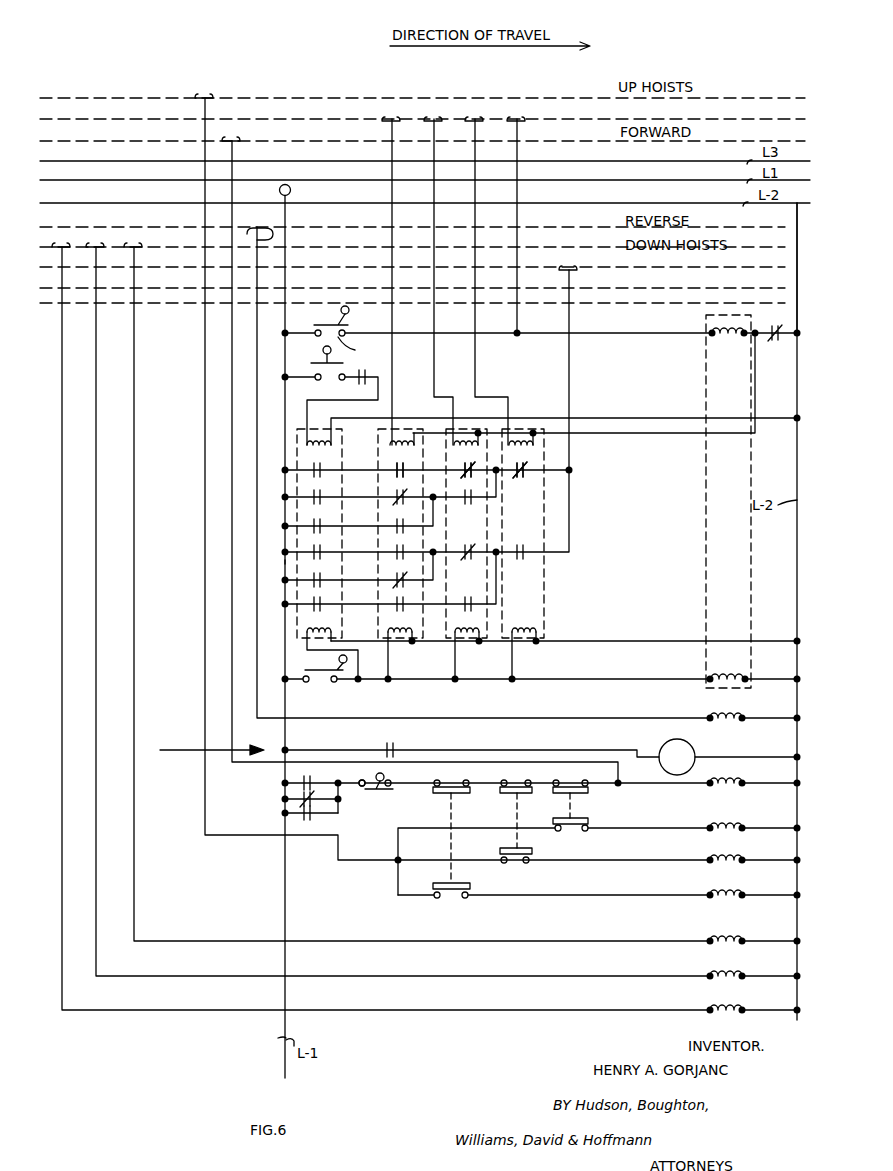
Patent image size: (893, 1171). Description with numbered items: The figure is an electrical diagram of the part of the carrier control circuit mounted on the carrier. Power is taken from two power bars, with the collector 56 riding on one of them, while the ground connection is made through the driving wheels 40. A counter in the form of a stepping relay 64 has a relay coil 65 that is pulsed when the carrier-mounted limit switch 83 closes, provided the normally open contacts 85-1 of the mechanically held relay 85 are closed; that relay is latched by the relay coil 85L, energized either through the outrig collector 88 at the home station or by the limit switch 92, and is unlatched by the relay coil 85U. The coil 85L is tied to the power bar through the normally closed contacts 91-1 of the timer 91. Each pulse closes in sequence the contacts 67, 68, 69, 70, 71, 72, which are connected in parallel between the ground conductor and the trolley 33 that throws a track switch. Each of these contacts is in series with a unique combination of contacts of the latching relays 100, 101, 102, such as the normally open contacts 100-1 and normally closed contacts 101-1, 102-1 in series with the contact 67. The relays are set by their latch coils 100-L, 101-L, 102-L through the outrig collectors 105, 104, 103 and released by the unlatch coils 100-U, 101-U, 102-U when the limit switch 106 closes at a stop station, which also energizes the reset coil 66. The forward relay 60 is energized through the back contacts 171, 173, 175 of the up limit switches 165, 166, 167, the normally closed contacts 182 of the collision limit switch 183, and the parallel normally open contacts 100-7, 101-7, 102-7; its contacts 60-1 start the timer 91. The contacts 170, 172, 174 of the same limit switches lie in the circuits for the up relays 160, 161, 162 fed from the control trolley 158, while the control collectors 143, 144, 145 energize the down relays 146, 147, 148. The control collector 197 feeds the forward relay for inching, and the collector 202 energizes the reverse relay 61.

The driving wheels 40 is at (291, 190).
The stepping relay 64 is at (284, 556).
The control collector 145 is at (66, 258).
The control collector 144 is at (100, 258).
The control collector 143 is at (138, 258).
The control trolley 158 is at (204, 133).
The control collector 197 is at (233, 153).
The collector 202 is at (475, 462).
The outrig collector 105 is at (394, 126).
The outrig collector 104 is at (436, 126).
The outrig collector 103 is at (477, 126).
The outrig collector 88 is at (519, 126).
The trolley 33 is at (560, 277).
The collector 56 is at (790, 224).
The limit switch 92 is at (345, 332).
The limit switch 83 is at (322, 360).
The latch relay coil 85L is at (708, 324).
The timer contacts 91-1 is at (778, 323).
The relay contacts 85-1 is at (360, 384).
The mechanically held relay 85 is at (706, 522).
The relay coil 65 is at (318, 443).
The latch coil 100-L is at (395, 435).
The latch coil 101-L is at (459, 435).
The latch coil 102-L is at (516, 435).
The contacts 67 is at (296, 470).
The contacts 68 is at (296, 497).
The contacts 69 is at (296, 526).
The contacts 70 is at (296, 552).
The contacts 71 is at (296, 580).
The contacts 72 is at (296, 604).
The latching relay 100 is at (391, 568).
The normally open contacts 100-1 is at (400, 479).
The latching relay 101 is at (466, 533).
The normally closed contacts 101-1 is at (466, 480).
The latching relay 102 is at (520, 533).
The normally closed contacts 102-1 is at (519, 480).
The reset coil 66 is at (322, 625).
The unlatch coil 100-U is at (398, 650).
The unlatch coil 101-U is at (466, 650).
The unlatch coil 102-U is at (523, 650).
The limit switch 106 is at (320, 690).
The unlatch relay coil 85U is at (746, 664).
The reverse relay 61 is at (742, 712).
The normally open contacts 60-1 is at (393, 741).
The collision limit switch 183 is at (366, 769).
The timer 91 is at (668, 730).
The normally open contacts 100-7 is at (285, 784).
The normally open contacts 101-7 is at (285, 801).
The normally open contacts 102-7 is at (285, 816).
The normally closed contacts 182 is at (375, 794).
The limit switch 167 is at (451, 807).
The limit switch 166 is at (516, 807).
The limit switch 165 is at (572, 801).
The back contacts 175 is at (453, 780).
The back contacts 173 is at (520, 780).
The back contacts 171 is at (568, 780).
The forward relay 60 is at (736, 777).
The contacts 170 is at (570, 835).
The up relay 160 is at (732, 820).
The contacts 172 is at (515, 866).
The up relay 161 is at (732, 852).
The contacts 174 is at (428, 892).
The up relay 162 is at (736, 887).
The down relay 146 is at (736, 932).
The down relay 147 is at (736, 968).
The down relay 148 is at (736, 1002).